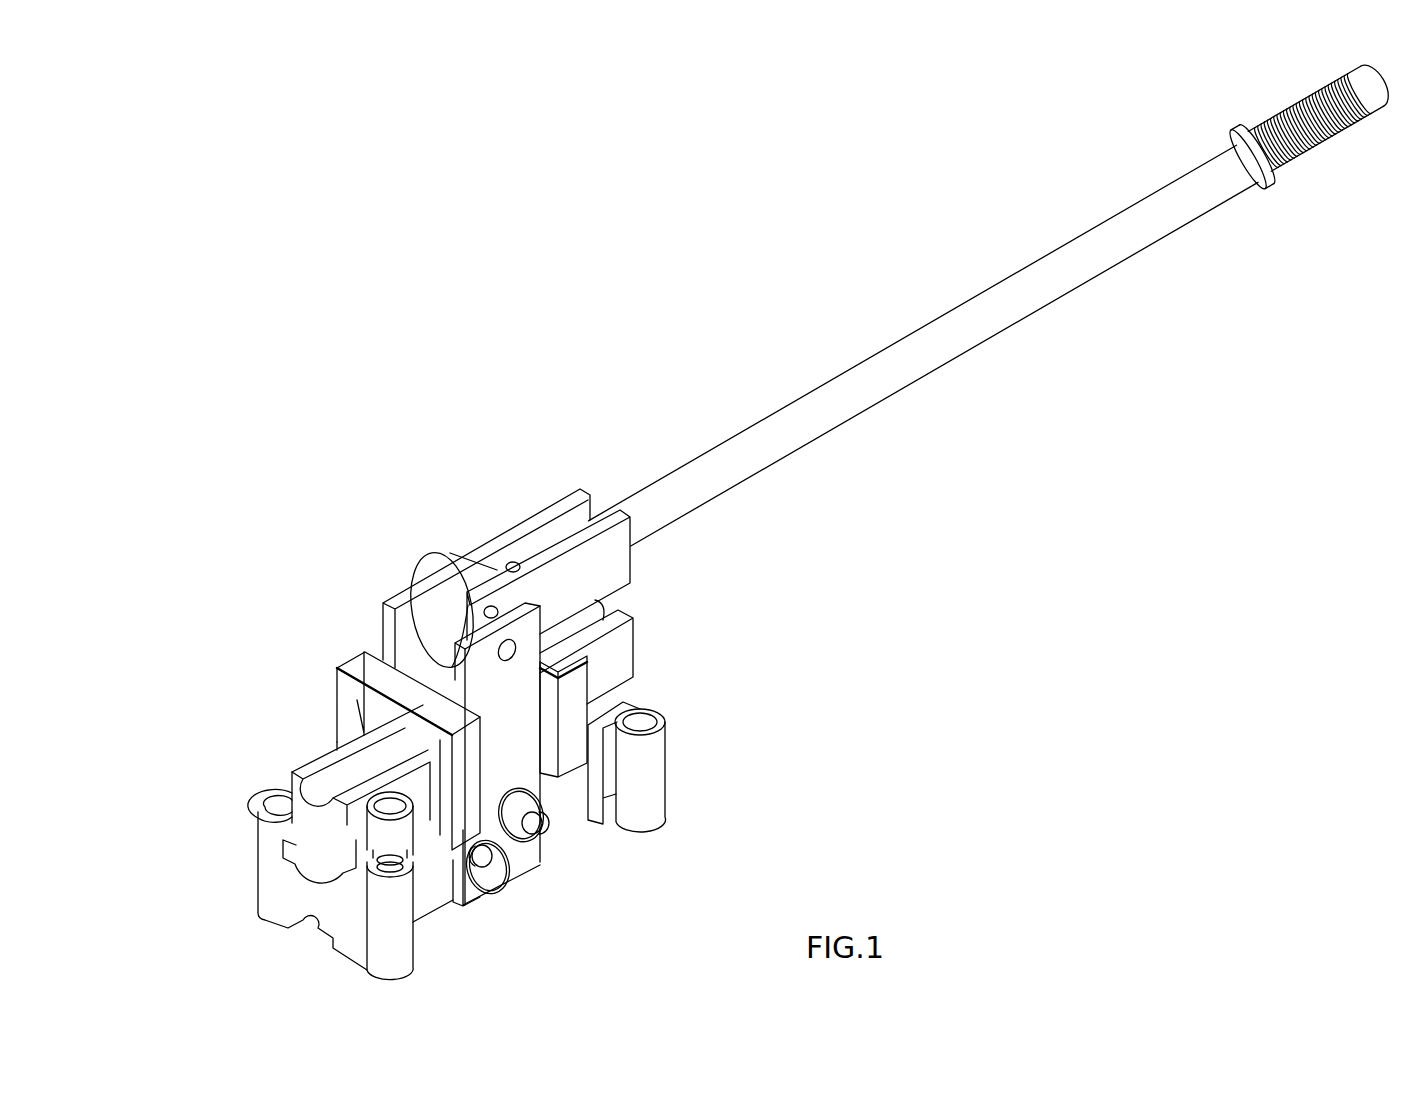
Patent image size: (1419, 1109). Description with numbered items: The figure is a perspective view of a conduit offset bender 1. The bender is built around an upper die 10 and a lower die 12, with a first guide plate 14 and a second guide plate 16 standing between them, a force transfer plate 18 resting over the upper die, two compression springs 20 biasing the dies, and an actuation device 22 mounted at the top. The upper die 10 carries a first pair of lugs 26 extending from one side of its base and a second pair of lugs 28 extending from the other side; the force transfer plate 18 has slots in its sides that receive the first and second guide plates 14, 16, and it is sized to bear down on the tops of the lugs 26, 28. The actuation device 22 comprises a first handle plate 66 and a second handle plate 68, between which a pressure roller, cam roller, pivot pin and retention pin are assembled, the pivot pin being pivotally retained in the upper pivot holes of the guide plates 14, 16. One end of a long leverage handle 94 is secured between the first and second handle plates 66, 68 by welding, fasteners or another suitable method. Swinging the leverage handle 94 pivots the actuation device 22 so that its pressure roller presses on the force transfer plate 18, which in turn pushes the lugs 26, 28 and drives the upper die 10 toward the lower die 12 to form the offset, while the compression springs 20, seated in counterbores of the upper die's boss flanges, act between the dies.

The conduit offset bender 1 is at (703, 638).
The upper die 10 is at (270, 782).
The lower die 12 is at (705, 772).
The first guide plate 14 is at (505, 760).
The second guide plate 16 is at (384, 602).
The force transfer plate 18 is at (370, 666).
The compression spring 20 is at (369, 874).
The actuation device 22 is at (408, 492).
The first pair of lugs 26 is at (462, 795).
The second pair of lugs 28 is at (334, 716).
The first handle plate 66 is at (605, 570).
The second handle plate 68 is at (540, 518).
The leverage handle 94 is at (950, 342).